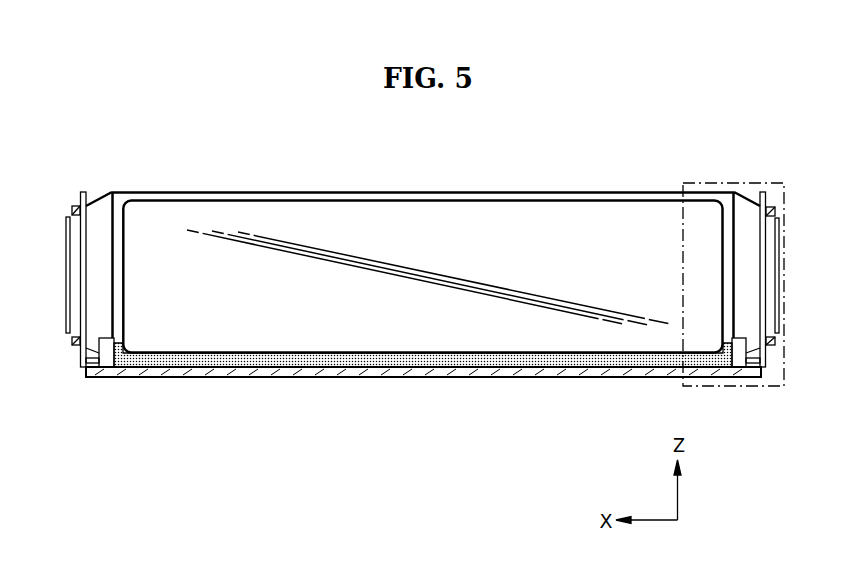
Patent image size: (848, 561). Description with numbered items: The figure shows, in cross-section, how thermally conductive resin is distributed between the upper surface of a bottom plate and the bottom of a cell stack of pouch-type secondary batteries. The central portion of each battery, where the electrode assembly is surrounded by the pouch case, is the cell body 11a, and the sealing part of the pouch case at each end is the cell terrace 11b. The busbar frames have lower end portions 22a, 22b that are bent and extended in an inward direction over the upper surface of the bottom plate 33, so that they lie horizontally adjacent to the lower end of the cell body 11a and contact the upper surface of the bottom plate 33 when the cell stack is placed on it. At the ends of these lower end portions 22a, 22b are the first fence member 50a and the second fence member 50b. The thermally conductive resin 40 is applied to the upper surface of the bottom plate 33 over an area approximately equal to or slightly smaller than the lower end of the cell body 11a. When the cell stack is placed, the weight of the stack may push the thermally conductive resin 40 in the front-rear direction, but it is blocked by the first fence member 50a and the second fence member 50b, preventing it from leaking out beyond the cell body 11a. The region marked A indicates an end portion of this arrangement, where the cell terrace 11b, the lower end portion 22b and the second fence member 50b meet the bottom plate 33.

The cell body 11a is at (582, 212).
The cell terrace 11b is at (99, 213).
The lower end portion of first busbar frame 22a is at (85, 362).
The lower end portion of second busbar frame 22b is at (762, 360).
The bottom plate 33 is at (475, 378).
The thermally conductive resin 40 is at (405, 364).
The first fence member 50a is at (107, 367).
The second fence member 50b is at (738, 364).
The detail region A is at (784, 193).